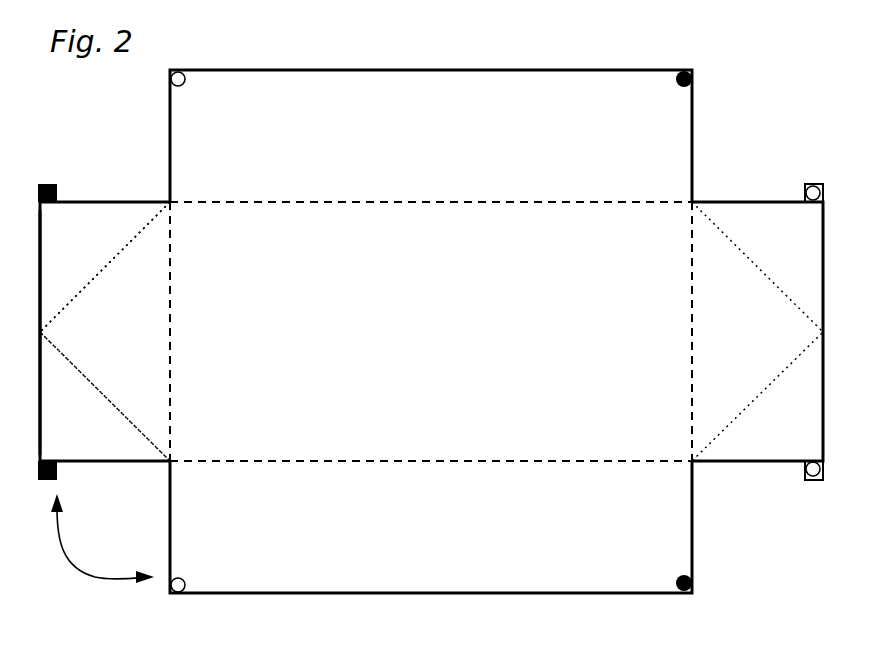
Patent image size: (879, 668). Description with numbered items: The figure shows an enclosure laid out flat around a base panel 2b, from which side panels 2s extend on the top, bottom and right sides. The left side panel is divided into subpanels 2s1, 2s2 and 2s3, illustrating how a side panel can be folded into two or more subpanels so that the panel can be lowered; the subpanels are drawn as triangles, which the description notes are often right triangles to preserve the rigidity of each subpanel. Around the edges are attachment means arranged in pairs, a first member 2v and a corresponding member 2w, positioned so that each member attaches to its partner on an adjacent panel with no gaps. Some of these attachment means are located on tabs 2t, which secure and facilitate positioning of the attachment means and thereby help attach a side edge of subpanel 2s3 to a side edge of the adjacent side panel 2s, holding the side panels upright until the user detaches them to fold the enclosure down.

The base panel 2b is at (431, 331).
The side panel 2s is at (496, 331).
The subpanel 2s1 is at (105, 267).
The subpanel 2s2 is at (105, 331).
The subpanel 2s3 is at (105, 396).
The tab 2t is at (806, 193).
The attachment means 2v is at (695, 70).
The attachment means 2w is at (815, 186).